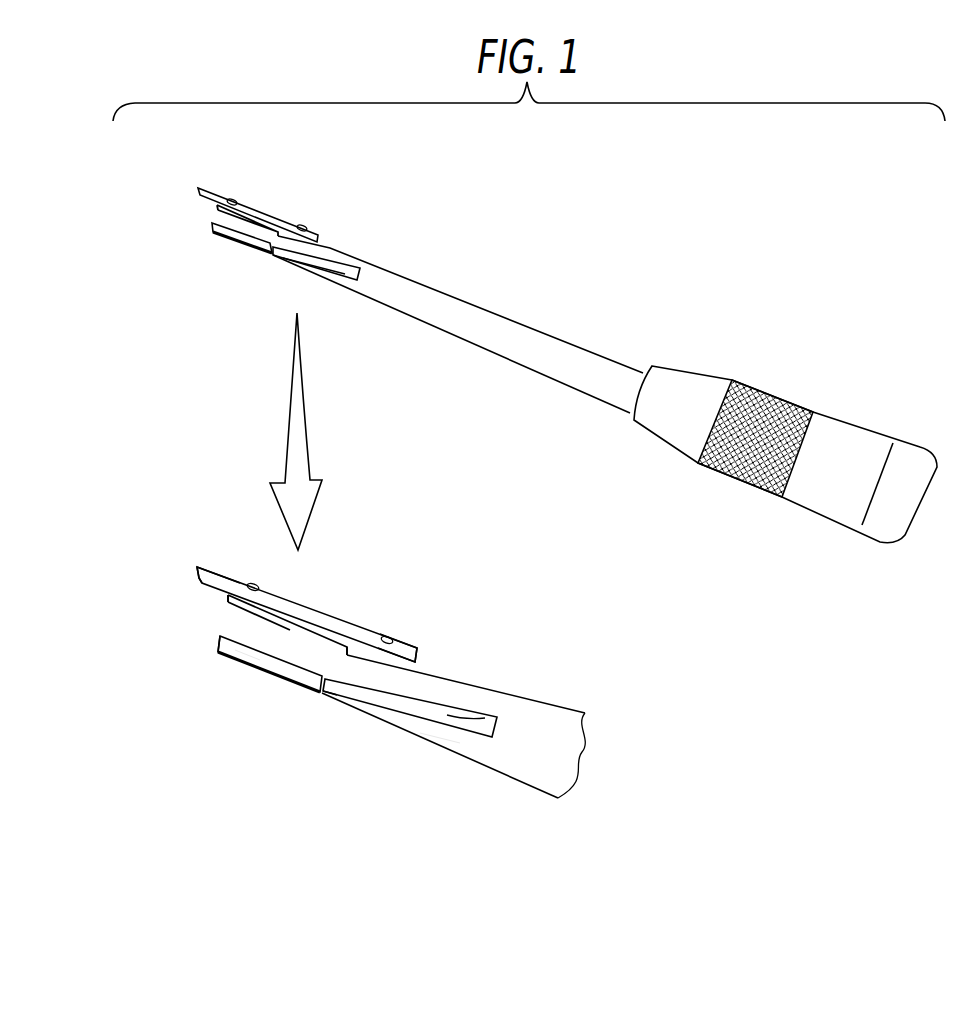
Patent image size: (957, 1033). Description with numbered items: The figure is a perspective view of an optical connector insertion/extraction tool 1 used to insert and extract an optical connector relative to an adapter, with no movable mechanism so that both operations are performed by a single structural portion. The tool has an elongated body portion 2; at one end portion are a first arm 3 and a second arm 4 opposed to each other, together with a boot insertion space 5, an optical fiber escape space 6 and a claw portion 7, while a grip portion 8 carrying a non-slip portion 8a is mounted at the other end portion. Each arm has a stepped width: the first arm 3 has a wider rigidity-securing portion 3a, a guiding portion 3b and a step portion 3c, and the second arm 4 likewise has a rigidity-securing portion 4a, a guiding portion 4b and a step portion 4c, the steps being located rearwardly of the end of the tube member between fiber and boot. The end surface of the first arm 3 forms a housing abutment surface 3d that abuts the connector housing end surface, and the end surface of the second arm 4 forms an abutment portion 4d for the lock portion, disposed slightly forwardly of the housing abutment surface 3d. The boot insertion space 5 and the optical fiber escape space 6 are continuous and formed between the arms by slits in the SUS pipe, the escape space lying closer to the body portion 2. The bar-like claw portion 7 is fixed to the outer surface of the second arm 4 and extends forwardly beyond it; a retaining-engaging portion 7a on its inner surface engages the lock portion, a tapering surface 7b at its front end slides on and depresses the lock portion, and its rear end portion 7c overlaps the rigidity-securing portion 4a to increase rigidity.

The optical connector insertion/extraction tool 1 is at (596, 307).
The body portion 2 is at (497, 335).
The first arm 3 is at (277, 250).
The rigidity-securing portion 3a is at (437, 737).
The guiding portion 3b is at (245, 655).
The step portion 3c is at (320, 697).
The housing abutment surface 3d is at (220, 642).
The second arm 4 is at (347, 252).
The rigidity-securing portion 4a is at (438, 678).
The guiding portion 4b is at (297, 623).
The step portion 4c is at (333, 650).
The abutment portion 4d is at (227, 597).
The boot insertion space 5 is at (248, 228).
The optical fiber escape space 6 is at (323, 262).
The claw portion 7 is at (277, 222).
The retaining-engaging portion 7a is at (198, 585).
The tapering surface 7b is at (197, 568).
The rear end portion 7c is at (407, 650).
The grip portion 8 is at (830, 412).
The non-slip portion 8a is at (735, 470).